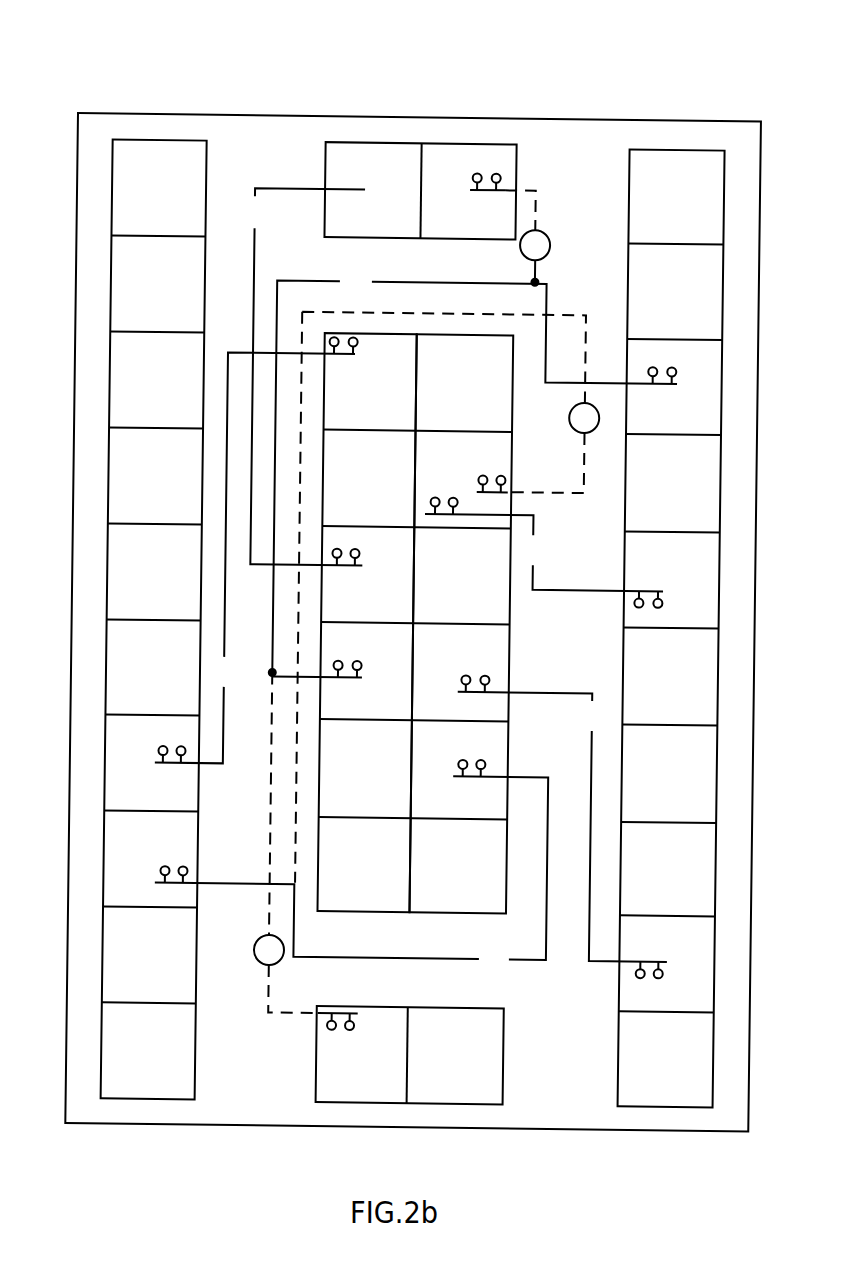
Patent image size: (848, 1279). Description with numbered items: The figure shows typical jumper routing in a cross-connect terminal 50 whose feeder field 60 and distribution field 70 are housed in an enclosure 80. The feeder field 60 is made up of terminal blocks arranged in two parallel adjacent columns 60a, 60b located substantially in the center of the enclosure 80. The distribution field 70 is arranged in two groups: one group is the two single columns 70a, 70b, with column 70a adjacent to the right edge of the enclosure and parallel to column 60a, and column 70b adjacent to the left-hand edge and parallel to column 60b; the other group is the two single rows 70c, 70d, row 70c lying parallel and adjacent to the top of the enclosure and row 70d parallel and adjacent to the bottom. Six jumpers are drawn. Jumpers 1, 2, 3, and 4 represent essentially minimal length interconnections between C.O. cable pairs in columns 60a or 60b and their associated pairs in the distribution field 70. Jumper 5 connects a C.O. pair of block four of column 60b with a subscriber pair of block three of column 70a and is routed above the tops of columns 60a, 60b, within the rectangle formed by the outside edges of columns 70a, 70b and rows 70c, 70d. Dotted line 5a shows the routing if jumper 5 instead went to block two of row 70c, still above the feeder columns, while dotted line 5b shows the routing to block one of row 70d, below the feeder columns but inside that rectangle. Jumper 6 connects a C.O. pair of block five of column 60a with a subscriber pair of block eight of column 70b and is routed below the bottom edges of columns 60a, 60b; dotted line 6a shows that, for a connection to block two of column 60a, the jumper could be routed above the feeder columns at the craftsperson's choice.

The cross-connect terminal 50 is at (277, 29).
The enclosure 80 is at (78, 619).
The distribution field 70 is at (140, 494).
The column of distribution field terminal blocks 70a is at (678, 142).
The column of distribution field terminal blocks 70b is at (153, 139).
The row of distribution field terminal blocks 70c is at (367, 139).
The row of distribution field terminal blocks 70d is at (395, 1099).
The feeder field 60 is at (415, 644).
The column of feeder field terminal blocks 60a is at (452, 908).
The column of feeder field terminal blocks 60b is at (375, 908).
The jumper 1 is at (300, 377).
The jumper 2 is at (256, 550).
The jumper 3 is at (544, 552).
The jumper 4 is at (562, 826).
The jumper 5 is at (471, 645).
The jumper 6 is at (351, 865).
The alternative jumper routing 5a is at (548, 225).
The alternative jumper routing 5b is at (265, 951).
The alternative jumper routing 6a is at (605, 411).